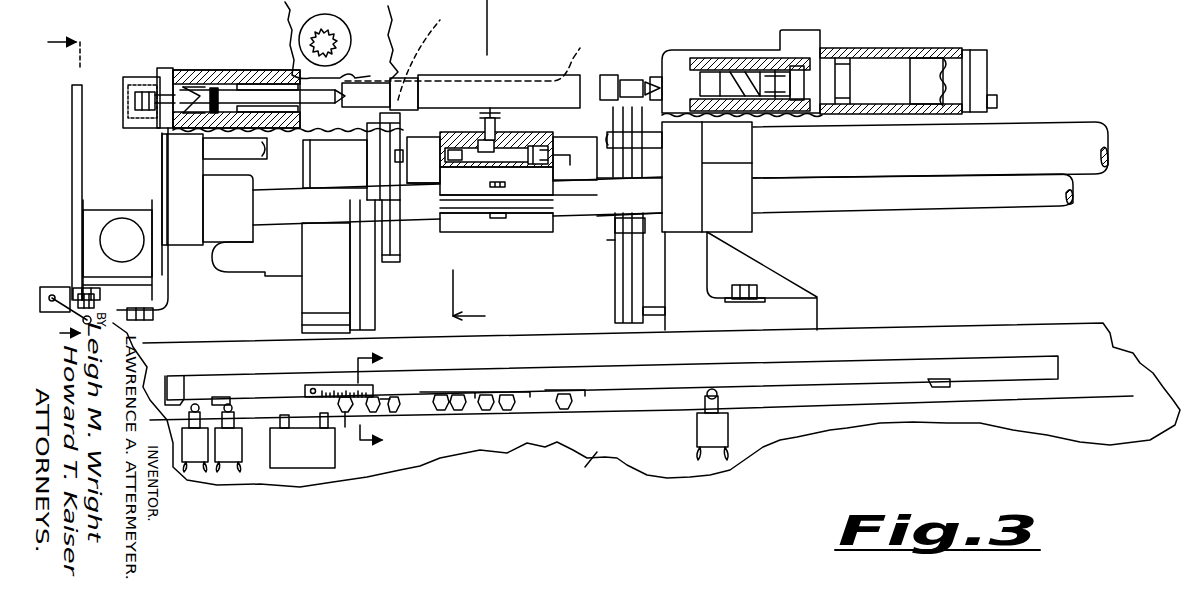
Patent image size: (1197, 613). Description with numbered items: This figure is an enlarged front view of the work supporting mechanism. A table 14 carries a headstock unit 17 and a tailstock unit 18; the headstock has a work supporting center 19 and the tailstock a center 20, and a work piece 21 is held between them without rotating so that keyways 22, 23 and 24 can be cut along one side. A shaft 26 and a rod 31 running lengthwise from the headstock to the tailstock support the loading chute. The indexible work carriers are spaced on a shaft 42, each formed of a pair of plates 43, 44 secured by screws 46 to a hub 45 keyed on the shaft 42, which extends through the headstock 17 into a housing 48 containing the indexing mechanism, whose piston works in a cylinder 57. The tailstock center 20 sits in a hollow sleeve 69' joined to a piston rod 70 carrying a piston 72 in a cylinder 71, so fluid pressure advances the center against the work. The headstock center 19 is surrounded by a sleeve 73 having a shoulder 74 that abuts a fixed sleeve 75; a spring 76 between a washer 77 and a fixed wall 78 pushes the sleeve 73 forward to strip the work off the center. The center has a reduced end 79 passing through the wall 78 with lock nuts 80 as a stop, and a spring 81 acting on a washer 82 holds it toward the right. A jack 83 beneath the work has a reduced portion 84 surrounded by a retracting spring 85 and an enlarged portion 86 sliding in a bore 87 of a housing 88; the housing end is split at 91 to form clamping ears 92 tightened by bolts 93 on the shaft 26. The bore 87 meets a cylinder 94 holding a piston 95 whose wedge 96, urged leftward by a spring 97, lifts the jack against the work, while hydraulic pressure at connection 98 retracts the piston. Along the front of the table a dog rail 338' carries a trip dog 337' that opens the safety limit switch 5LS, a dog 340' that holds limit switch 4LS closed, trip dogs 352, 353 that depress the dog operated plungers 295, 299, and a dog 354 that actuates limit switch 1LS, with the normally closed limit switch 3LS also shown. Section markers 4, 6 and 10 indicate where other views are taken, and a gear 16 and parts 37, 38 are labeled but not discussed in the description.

The machine / section line 10 is at (525, 248).
The table 14 is at (960, 333).
The drive gear 16 is at (340, 42).
The headstock unit 17 is at (218, 300).
The tailstock unit 18 is at (740, 258).
The work supporting center 19 is at (345, 83).
The tailstock center 20 is at (634, 80).
The work piece 21 is at (455, 77).
The keyway 22 is at (424, 60).
The keyway 23 is at (552, 70).
The keyway 24 is at (606, 76).
The shaft 26 is at (875, 214).
The rod 31 is at (265, 148).
The clamp plate 37 is at (376, 325).
The clamp block 38 is at (336, 314).
The shaft 42 is at (1048, 130).
The plate 43 is at (382, 262).
The plate 44 is at (400, 254).
The hub 45 is at (368, 190).
The screws 46 is at (392, 170).
The housing 48 is at (85, 100).
The cylinder 57 is at (115, 235).
The hollow sleeve 69' is at (664, 58).
The piston rod 70 is at (780, 75).
The cylinder 71 is at (970, 56).
The piston 72 is at (925, 64).
The sleeve 73 is at (250, 80).
The shoulder 74 is at (335, 164).
The fixed sleeve 75 is at (258, 84).
The spring 76 is at (190, 86).
The washer 77 is at (214, 86).
The fixed wall 78 is at (168, 68).
The reduced end 79 is at (157, 68).
The lock nuts 80 is at (140, 110).
The spring 81 is at (183, 128).
The washer 82 is at (205, 78).
The jack 83 is at (490, 108).
The reduced portion 84 is at (520, 138).
The spring 85 is at (488, 142).
The enlarged portion 86 is at (545, 148).
The bore 87 is at (462, 150).
The housing 88 is at (575, 158).
The split 91 is at (575, 210).
The clamping ears 92 is at (440, 196).
The clamping bolts 93 is at (495, 232).
The cylinder 94 is at (445, 158).
The piston 95 is at (510, 168).
The wedge 96 is at (478, 168).
The spring 97 is at (560, 158).
The hydraulic connection 98 is at (452, 168).
The dog operated plunger 299 is at (288, 412).
The dog operated plunger 295 is at (323, 468).
The trip dog 337' is at (184, 378).
The dog rail 338' is at (641, 381).
The dog 340' is at (234, 378).
The trip dog 352 is at (345, 427).
The trip dog 353 is at (400, 418).
The dog 354 is at (940, 387).
The limit switch 1LS is at (712, 447).
The limit switch 3LS is at (52, 287).
The limit switch 4LS is at (230, 462).
The limit switch 5LS is at (196, 462).
The section line 4 is at (381, 402).
The section line 6 is at (53, 189).